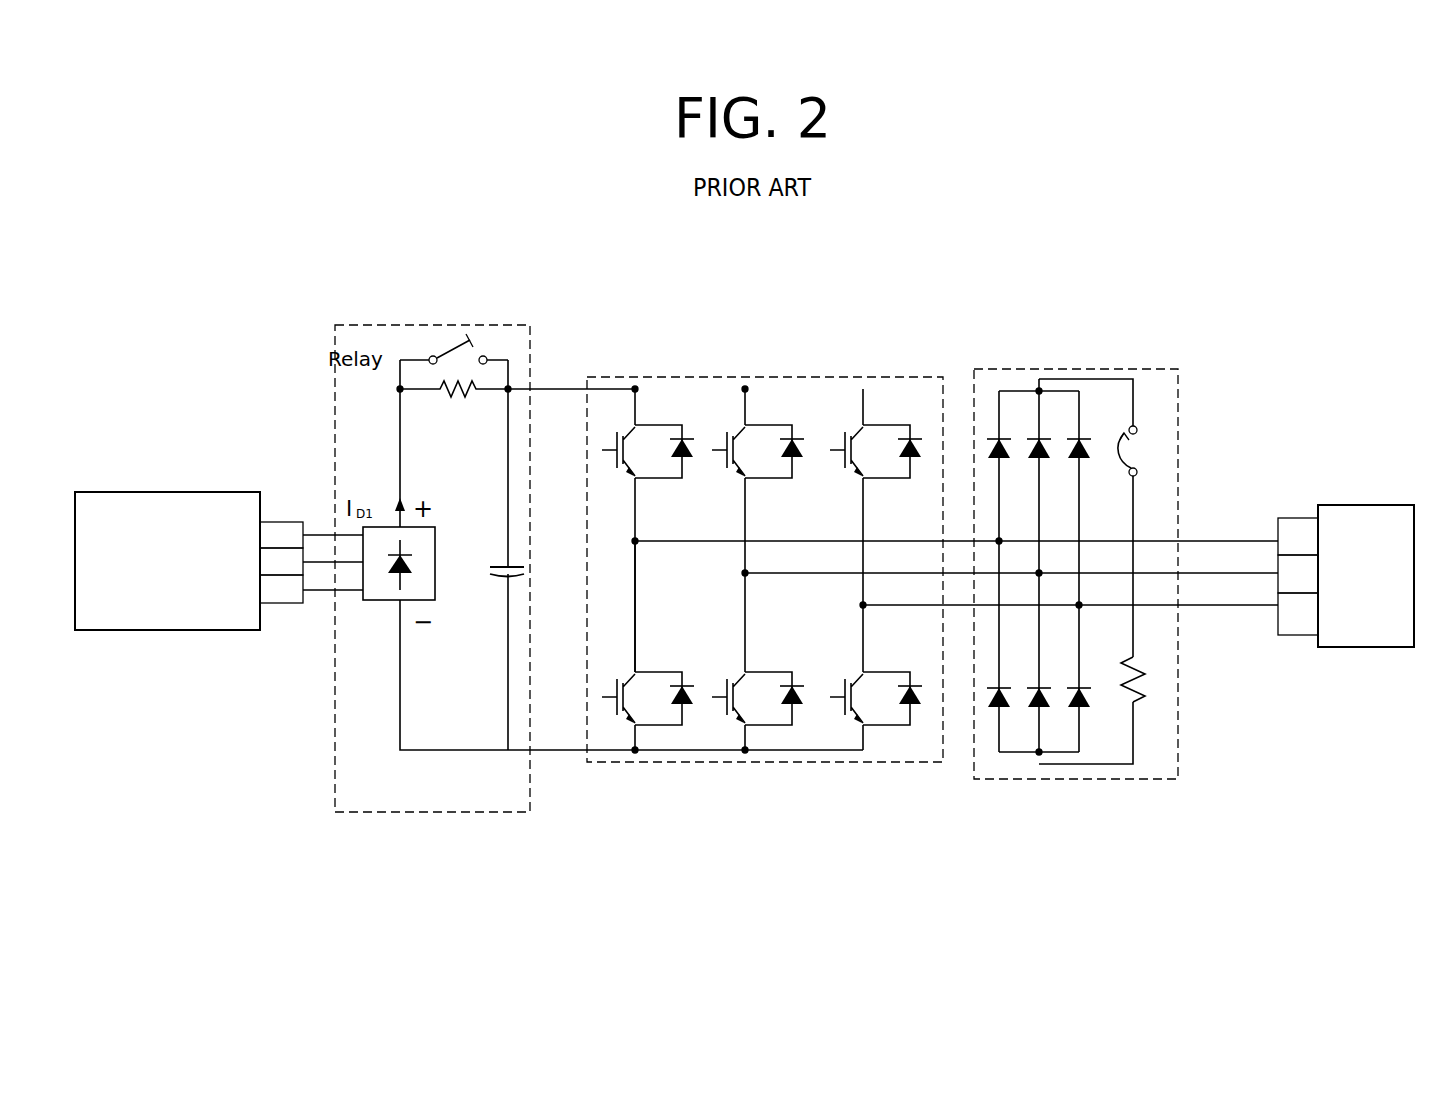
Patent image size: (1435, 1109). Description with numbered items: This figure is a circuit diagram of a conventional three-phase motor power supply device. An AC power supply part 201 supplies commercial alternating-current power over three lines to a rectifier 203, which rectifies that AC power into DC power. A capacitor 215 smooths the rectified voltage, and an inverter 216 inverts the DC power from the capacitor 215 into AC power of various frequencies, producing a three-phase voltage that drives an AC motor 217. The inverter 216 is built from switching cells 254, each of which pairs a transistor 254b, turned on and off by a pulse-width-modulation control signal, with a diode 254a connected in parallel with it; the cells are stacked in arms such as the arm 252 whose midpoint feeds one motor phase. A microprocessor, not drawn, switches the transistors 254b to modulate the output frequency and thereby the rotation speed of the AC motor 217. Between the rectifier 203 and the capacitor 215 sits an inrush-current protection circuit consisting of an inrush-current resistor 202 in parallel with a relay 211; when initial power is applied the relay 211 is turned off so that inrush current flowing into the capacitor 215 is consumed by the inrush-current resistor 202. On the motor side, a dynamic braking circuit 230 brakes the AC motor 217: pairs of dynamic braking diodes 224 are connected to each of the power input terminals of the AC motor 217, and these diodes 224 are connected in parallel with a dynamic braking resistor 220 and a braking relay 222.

The AC power supply part 201 is at (170, 492).
The rectifier 203 is at (375, 593).
The relay 211 is at (458, 350).
The inrush-current resistor 202 is at (470, 383).
The capacitor 215 is at (506, 573).
The inverter 216 is at (793, 377).
The switching element 254 is at (670, 575).
The freewheeling diode 254a is at (686, 453).
The transistor 254b is at (622, 466).
The inverter arm 252 is at (697, 560).
The dynamic braking circuit 230 is at (1128, 369).
The dynamic braking diode 224 is at (998, 438).
The braking relay 222 is at (1135, 456).
The dynamic braking resistor 220 is at (1147, 668).
The AC motor 217 is at (1367, 648).